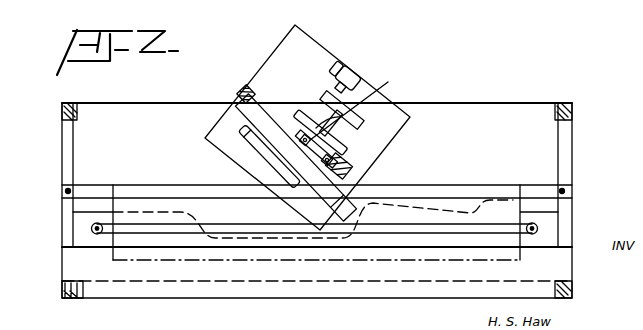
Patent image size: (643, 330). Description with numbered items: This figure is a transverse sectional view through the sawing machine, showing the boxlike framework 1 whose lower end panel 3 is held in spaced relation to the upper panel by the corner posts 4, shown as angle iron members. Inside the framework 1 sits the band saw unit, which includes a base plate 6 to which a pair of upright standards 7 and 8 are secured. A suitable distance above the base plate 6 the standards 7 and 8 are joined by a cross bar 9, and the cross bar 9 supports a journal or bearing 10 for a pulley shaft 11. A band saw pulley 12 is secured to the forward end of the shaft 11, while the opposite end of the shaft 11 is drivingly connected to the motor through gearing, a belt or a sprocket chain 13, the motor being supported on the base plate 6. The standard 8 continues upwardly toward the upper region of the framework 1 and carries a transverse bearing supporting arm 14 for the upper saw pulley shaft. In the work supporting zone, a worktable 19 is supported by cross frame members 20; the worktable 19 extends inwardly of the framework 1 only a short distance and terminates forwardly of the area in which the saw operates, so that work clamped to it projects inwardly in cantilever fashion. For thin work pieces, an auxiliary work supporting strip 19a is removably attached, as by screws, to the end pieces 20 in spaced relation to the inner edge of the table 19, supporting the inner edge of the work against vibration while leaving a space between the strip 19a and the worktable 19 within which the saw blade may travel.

The framework 1 is at (586, 148).
The lower end panel 3 is at (500, 110).
The corner post 4 is at (62, 111).
The base plate 6 is at (305, 38).
The standard 7 is at (352, 170).
The standard 8 is at (243, 92).
The cross bar 9 is at (262, 105).
The bearing 10 is at (292, 185).
The pulley shaft 11 is at (340, 141).
The band saw pulley 12 is at (257, 142).
The sprocket chain 13 is at (358, 108).
The bearing supporting arm 14 is at (346, 68).
The worktable 19 is at (133, 277).
The auxiliary work supporting strip 19a is at (92, 195).
The cross frame members 20 is at (73, 177).